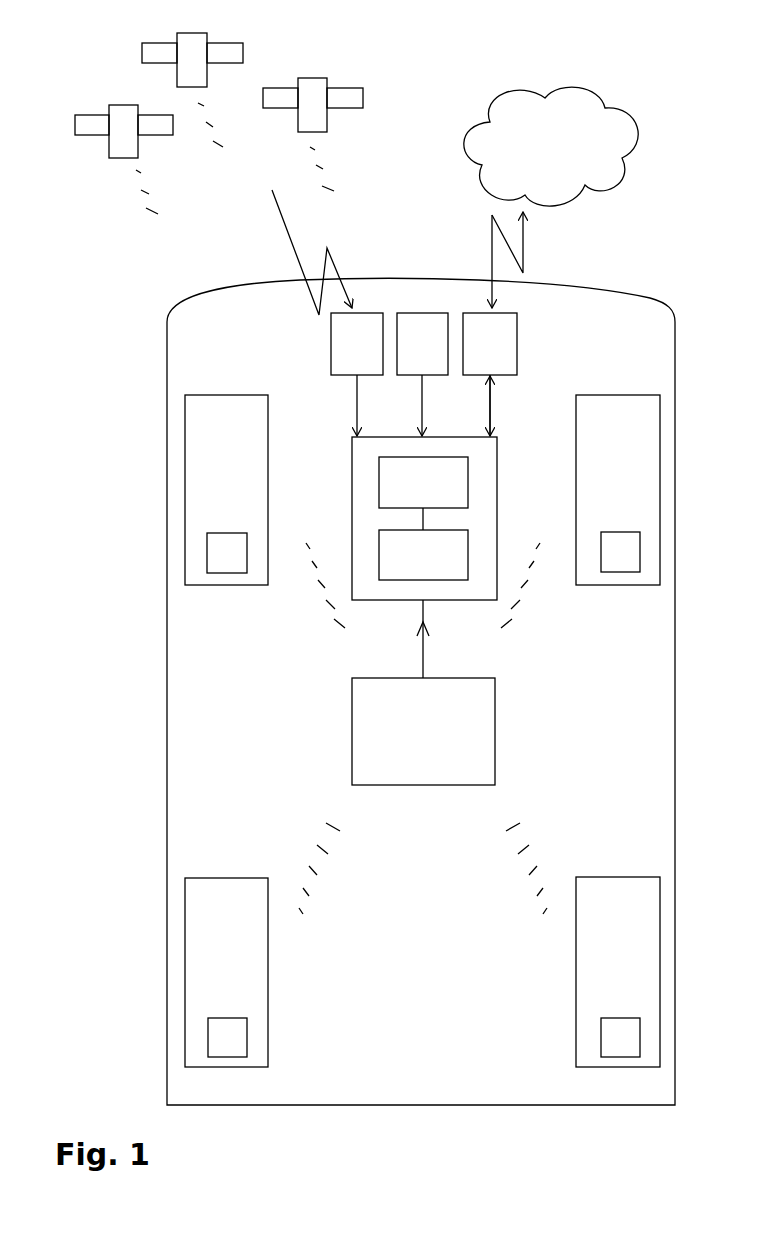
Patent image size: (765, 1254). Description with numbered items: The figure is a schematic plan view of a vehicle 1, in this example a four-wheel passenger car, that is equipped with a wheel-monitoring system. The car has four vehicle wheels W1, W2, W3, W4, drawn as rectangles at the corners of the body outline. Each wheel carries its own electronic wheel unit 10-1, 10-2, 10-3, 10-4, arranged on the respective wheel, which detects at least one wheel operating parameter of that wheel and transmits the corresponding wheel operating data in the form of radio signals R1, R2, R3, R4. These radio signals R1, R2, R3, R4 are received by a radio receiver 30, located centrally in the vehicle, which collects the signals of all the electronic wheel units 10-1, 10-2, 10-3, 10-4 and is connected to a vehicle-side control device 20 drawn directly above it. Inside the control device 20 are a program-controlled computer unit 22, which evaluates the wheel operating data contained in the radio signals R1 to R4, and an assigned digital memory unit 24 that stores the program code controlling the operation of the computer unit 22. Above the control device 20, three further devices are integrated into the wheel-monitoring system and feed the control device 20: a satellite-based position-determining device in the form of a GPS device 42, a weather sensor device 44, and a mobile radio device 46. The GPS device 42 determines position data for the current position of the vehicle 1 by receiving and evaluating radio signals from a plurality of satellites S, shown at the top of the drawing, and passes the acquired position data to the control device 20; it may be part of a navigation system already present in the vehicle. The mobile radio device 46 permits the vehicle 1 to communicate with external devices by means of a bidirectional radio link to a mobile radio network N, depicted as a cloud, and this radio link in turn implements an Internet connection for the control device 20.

The satellites S is at (108, 45).
The mobile radio network N is at (551, 146).
The vehicle 1 is at (132, 297).
The GPS device 42 is at (369, 356).
The weather sensor device 44 is at (434, 356).
The mobile radio device 46 is at (502, 356).
The control device 20 is at (365, 508).
The computer unit 22 is at (435, 493).
The digital memory unit 24 is at (435, 566).
The radio receiver 30 is at (435, 738).
The vehicle wheel W1 is at (202, 463).
The vehicle wheel W2 is at (642, 468).
The vehicle wheel W3 is at (208, 940).
The vehicle wheel W4 is at (643, 938).
The electronic wheel unit 10-1 is at (217, 548).
The electronic wheel unit 10-2 is at (630, 545).
The electronic wheel unit 10-3 is at (217, 1033).
The electronic wheel unit 10-4 is at (630, 1033).
The radio signal R1 is at (350, 662).
The radio signal R2 is at (502, 640).
The radio signal R3 is at (348, 797).
The radio signal R4 is at (488, 797).